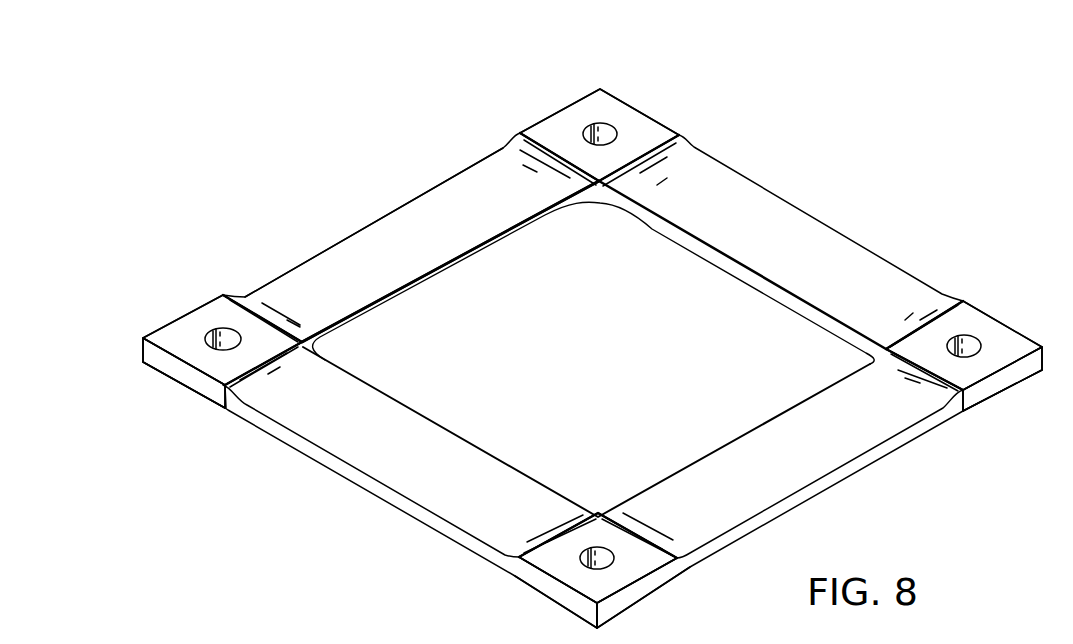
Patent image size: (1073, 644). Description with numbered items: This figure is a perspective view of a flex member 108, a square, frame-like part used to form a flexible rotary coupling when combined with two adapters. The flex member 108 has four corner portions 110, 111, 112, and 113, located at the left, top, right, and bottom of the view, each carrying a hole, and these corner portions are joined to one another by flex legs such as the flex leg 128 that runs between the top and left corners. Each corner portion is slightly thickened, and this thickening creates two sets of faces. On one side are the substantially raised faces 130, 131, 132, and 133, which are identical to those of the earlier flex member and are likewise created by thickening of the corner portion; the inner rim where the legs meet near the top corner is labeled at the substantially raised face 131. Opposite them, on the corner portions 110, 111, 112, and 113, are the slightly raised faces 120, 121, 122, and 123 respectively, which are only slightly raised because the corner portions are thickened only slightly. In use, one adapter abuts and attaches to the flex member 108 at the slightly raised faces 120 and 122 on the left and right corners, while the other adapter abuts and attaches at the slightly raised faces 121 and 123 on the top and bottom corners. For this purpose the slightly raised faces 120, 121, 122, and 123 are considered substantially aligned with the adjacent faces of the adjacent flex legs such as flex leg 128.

The flex member 108 is at (592, 380).
The corner portion 110 is at (187, 404).
The corner portion 111 is at (643, 94).
The corner portion 112 is at (1025, 388).
The corner portion 113 is at (691, 592).
The slightly raised face 120 is at (165, 377).
The slightly raised face 121 is at (573, 122).
The slightly raised face 122 is at (977, 408).
The slightly raised face 123 is at (562, 567).
The flex leg 128 is at (385, 232).
The substantially raised face 130 is at (181, 327).
The substantially raised face 131 is at (600, 184).
The substantially raised face 132 is at (993, 335).
The substantially raised face 133 is at (632, 612).